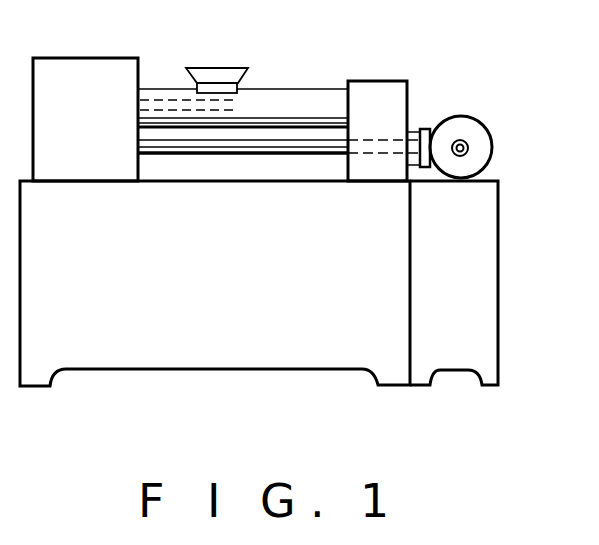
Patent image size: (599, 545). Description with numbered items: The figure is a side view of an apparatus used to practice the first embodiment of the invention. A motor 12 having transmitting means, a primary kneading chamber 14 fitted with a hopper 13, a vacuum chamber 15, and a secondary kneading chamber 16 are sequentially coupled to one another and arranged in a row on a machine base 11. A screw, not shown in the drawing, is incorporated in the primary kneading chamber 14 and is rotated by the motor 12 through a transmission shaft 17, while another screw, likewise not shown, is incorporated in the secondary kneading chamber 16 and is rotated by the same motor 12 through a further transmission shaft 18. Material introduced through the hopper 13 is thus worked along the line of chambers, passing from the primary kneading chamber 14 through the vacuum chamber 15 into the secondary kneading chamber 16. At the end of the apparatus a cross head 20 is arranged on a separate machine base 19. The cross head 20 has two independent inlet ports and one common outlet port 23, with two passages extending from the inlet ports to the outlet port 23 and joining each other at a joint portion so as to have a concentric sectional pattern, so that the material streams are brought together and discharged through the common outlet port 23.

The machine base 11 is at (131, 360).
The motor 12 is at (66, 68).
The hopper 13 is at (218, 68).
The primary kneading chamber 14 is at (293, 99).
The vacuum chamber 15 is at (369, 95).
The secondary kneading chamber 16 is at (415, 137).
The transmission shaft 17 is at (165, 100).
The transmission shaft 18 is at (208, 148).
The machine base 19 is at (477, 278).
The cross head 20 is at (492, 147).
The common outlet port 23 is at (468, 146).